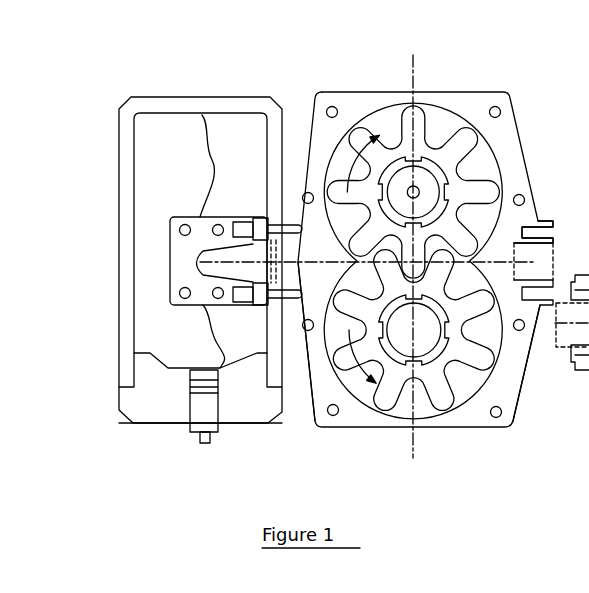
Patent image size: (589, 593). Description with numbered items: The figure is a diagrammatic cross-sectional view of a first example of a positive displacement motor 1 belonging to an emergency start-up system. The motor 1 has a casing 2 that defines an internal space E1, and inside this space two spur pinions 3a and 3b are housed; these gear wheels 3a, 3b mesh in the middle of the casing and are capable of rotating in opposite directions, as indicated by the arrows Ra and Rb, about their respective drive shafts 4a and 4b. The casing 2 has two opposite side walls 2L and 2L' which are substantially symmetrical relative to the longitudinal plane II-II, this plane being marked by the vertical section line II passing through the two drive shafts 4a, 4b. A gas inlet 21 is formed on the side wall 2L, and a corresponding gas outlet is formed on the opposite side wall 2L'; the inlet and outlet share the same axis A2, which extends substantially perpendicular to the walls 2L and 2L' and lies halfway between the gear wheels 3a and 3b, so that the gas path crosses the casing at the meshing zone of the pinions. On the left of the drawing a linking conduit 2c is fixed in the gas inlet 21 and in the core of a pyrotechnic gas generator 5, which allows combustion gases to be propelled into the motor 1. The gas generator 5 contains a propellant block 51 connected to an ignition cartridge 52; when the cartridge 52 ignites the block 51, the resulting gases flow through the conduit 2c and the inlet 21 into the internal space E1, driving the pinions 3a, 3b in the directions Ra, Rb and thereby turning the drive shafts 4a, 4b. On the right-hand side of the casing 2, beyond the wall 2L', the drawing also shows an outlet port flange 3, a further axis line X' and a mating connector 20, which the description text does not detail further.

The positive displacement motor 1 is at (529, 123).
The casing 2 is at (350, 103).
The linking conduit 2c is at (224, 222).
The side wall 2L is at (288, 363).
The side wall 2L' is at (534, 376).
The outlet port flange 3 is at (551, 223).
The spur pinion 3a is at (467, 142).
The spur pinion 3b is at (441, 400).
The drive shaft 4a is at (446, 172).
The drive shaft 4b is at (445, 298).
The pyrotechnic gas generator 5 is at (108, 268).
The connector 20 is at (572, 355).
The gas inlet 21 is at (300, 263).
The propellant block 51 is at (196, 166).
The ignition cartridge 52 is at (192, 405).
The axis A2 is at (333, 264).
The internal space E1 is at (438, 118).
The arrow Ra is at (353, 164).
The arrow Rb is at (355, 402).
The axis line X' is at (564, 335).
The longitudinal plane II is at (413, 64).